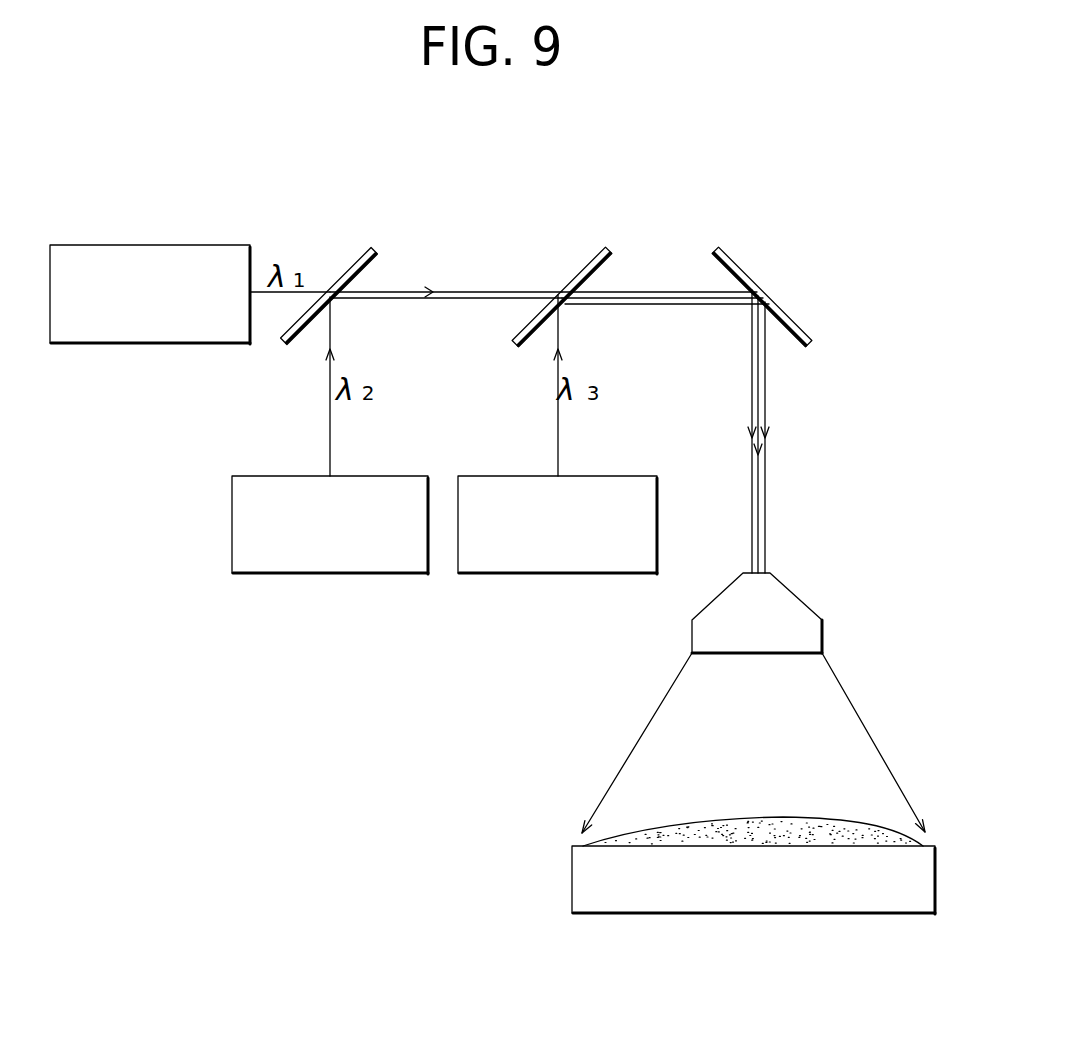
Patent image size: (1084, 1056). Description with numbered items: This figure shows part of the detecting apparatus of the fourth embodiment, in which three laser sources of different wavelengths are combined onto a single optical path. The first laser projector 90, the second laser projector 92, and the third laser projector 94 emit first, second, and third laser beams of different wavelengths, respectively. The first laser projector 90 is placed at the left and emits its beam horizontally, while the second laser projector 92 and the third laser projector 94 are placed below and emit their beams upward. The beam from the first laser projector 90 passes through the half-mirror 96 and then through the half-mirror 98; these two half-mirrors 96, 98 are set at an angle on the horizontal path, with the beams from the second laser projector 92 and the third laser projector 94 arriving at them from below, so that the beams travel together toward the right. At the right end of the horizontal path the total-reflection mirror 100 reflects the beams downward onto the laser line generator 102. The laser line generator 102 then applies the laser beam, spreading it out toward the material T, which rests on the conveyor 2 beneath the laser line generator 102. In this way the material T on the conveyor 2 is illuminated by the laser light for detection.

The first laser projector 90 is at (208, 244).
The second laser projector 92 is at (400, 574).
The third laser projector 94 is at (628, 574).
The half-mirror 96 is at (351, 264).
The half-mirror 98 is at (588, 266).
The total-reflection mirror 100 is at (736, 260).
The laser line generator 102 is at (798, 595).
The material T is at (835, 822).
The conveyor 2 is at (570, 868).